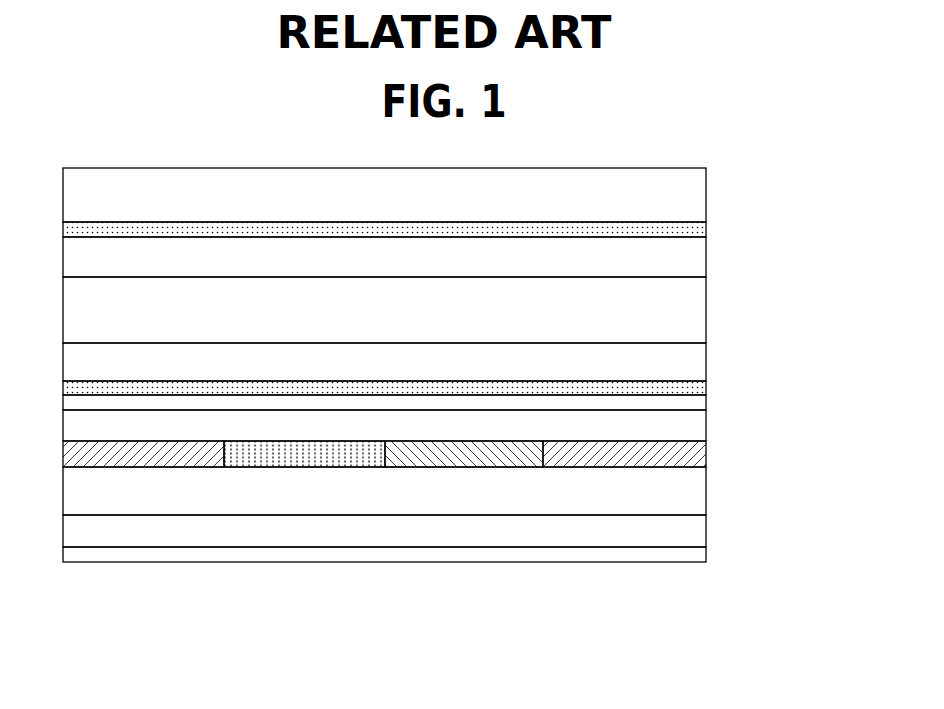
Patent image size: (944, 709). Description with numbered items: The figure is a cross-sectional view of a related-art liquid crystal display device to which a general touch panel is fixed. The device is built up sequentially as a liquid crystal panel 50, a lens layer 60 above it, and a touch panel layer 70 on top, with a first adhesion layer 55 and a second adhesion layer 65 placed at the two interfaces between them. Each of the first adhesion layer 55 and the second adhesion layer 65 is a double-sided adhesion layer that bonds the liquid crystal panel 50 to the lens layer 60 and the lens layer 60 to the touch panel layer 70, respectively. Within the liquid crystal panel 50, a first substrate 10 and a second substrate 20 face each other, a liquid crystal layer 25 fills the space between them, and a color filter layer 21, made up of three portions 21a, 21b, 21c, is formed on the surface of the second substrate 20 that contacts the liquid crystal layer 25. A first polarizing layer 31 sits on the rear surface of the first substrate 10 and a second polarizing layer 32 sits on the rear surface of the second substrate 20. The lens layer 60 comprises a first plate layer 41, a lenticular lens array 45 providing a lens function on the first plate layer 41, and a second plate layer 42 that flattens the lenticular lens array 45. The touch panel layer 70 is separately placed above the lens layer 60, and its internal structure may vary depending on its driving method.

The touch panel layer 70 is at (692, 190).
The second adhesion layer 65 is at (692, 229).
The lens layer 60 is at (447, 309).
The second plate layer 42 is at (692, 255).
The lenticular lens array 45 is at (692, 307).
The first plate layer 41 is at (418, 362).
The first adhesion layer 55 is at (692, 385).
The liquid crystal panel 50 is at (447, 537).
The second polarizing layer 32 is at (692, 403).
The second substrate 20 is at (692, 428).
The color filter layer 21 is at (384, 561).
The color filter 21a is at (147, 453).
The color filter 21b is at (300, 453).
The color filter 21c is at (464, 528).
The liquid crystal layer 25 is at (692, 491).
The first substrate 10 is at (692, 531).
The first polarizing layer 31 is at (418, 557).